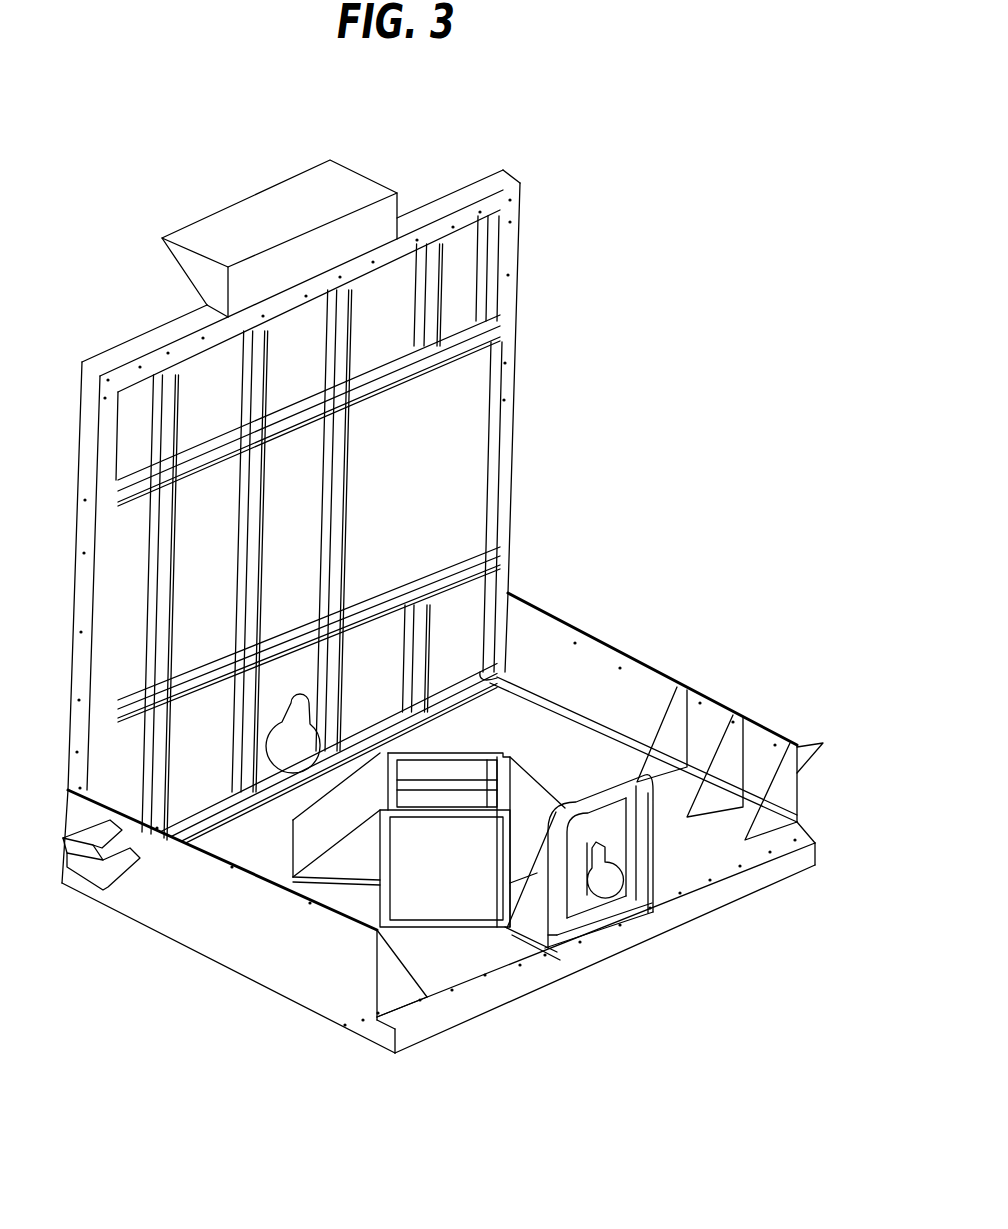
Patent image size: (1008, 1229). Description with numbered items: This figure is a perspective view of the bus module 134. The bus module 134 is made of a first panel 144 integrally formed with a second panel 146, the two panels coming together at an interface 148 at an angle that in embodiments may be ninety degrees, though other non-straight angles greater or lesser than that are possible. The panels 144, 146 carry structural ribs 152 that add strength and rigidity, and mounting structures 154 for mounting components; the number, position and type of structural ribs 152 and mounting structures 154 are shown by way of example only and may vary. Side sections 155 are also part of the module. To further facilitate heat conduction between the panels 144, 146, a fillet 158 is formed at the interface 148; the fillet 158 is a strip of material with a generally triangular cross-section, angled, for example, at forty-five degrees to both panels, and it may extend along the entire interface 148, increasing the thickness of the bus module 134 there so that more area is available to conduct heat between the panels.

The bus module 134 is at (712, 268).
The first panel 144 is at (333, 480).
The second panel 146 is at (630, 754).
The interface 148 is at (438, 804).
The structural ribs 152 is at (378, 520).
The mounting structures 154 is at (428, 870).
The side sections 155 is at (464, 806).
The fillet 158 is at (395, 660).